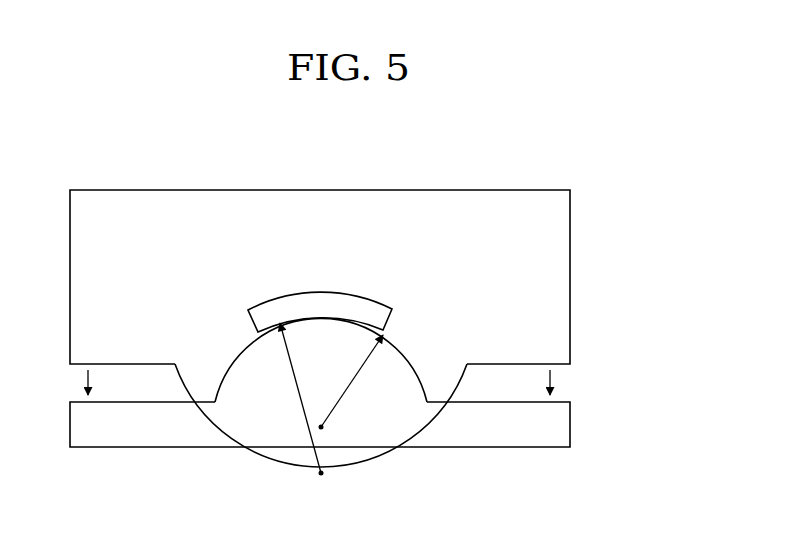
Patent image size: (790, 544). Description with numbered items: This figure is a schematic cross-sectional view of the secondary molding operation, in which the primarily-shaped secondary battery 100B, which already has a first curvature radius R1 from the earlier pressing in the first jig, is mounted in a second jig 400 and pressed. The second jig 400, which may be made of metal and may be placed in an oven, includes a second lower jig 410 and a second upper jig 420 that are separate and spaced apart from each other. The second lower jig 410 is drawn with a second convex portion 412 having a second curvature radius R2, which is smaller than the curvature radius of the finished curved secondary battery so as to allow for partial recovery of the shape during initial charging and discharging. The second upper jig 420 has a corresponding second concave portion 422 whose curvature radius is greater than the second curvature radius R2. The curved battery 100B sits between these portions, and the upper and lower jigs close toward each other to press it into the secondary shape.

The primarily-shaped secondary battery 100B is at (318, 297).
The second jig 400 is at (396, 350).
The second lower jig 410 is at (365, 414).
The second convex portion 412 is at (276, 352).
The second upper jig 420 is at (365, 350).
The second concave portion 422 is at (427, 313).
The first curvature radius R1 is at (302, 399).
The second curvature radius R2 is at (351, 382).